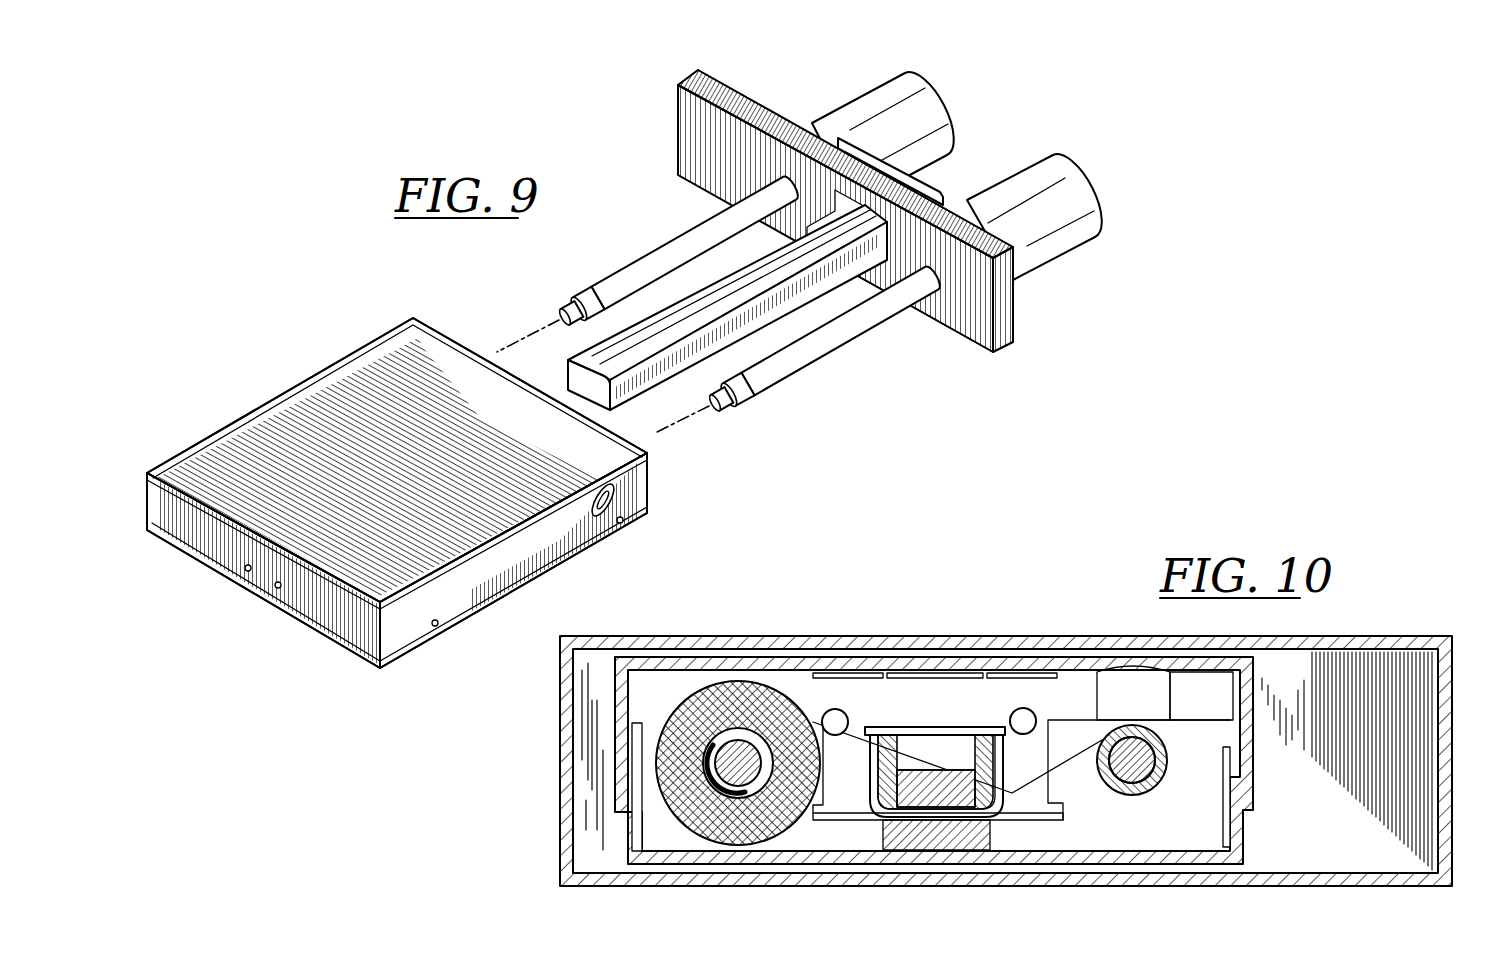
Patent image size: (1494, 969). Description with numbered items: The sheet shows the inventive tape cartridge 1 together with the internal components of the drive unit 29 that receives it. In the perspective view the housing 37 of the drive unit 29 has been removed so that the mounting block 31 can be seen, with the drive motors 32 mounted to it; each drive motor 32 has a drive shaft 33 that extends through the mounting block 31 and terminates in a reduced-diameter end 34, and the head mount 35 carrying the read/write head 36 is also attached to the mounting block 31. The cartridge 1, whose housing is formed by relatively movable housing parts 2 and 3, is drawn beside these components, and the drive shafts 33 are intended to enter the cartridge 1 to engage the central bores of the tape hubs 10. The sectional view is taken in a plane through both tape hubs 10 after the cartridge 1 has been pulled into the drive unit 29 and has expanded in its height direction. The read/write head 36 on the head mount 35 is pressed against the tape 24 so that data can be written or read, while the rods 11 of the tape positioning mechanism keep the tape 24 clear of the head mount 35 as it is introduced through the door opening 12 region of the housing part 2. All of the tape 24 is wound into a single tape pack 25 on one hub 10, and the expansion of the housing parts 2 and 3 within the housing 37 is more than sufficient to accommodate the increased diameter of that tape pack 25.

In FIG. 9, the tape cartridge 1 is at (326, 335).
In FIG. 10, the tape cartridge 1 is at (1272, 762).
In FIG. 10, the housing part 2 is at (1243, 670).
In FIG. 10, the housing part 3 is at (1238, 837).
In FIG. 10, the tape hub 10 is at (733, 733).
In FIG. 10, the rod 11 is at (829, 722).
In FIG. 10, the door opening 12 is at (843, 802).
In FIG. 10, the tape 24 is at (1063, 765).
In FIG. 10, the tape pack 25 is at (713, 702).
In FIG. 10, the drive unit 29 is at (1363, 610).
In FIG. 9, the mounting block 31 is at (713, 92).
In FIG. 9, the drive motor 32 is at (937, 113).
In FIG. 9, the drive shaft 33 is at (673, 253).
In FIG. 9, the reduced-diameter end 34 is at (583, 307).
In FIG. 9, the head mount 35 is at (630, 387).
In FIG. 10, the head mount 35 is at (898, 730).
In FIG. 9, the read/write head 36 is at (807, 227).
In FIG. 10, the read/write head 36 is at (950, 777).
In FIG. 10, the housing 37 is at (1445, 760).